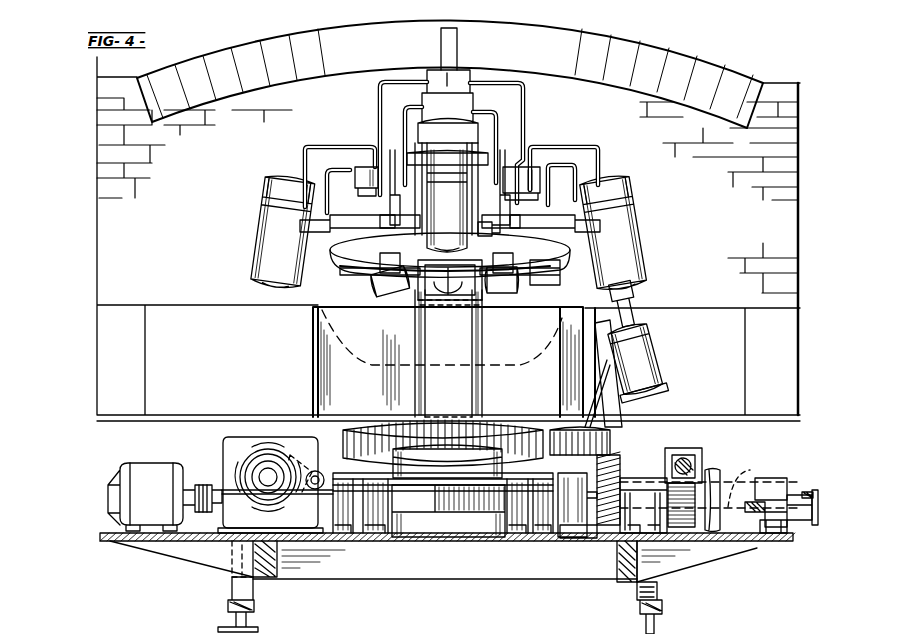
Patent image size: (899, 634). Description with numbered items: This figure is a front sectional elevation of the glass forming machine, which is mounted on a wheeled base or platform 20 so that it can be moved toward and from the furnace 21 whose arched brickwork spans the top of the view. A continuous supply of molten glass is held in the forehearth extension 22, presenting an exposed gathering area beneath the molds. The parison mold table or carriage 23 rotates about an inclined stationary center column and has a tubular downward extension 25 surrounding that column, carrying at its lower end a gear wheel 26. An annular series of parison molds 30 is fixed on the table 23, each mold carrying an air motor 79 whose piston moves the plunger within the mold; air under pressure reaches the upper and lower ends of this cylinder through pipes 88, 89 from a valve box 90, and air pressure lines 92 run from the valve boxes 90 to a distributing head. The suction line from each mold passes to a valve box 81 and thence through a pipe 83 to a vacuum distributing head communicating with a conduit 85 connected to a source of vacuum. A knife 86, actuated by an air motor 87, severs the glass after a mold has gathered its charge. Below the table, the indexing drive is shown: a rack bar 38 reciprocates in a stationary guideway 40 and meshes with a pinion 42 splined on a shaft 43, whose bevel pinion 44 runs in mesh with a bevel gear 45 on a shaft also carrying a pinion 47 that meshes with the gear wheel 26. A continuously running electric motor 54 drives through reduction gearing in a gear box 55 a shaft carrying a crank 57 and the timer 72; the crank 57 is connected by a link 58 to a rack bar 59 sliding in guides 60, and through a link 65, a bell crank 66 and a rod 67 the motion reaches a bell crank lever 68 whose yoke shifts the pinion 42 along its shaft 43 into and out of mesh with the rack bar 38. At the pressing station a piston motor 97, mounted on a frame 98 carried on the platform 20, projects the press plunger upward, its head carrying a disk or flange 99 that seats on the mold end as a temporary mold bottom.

The wheeled base or platform 20 is at (333, 580).
The furnace 21 is at (300, 48).
The forehearth extension 22 is at (313, 347).
The parison mold table or carriage 23 is at (335, 262).
The tubular downward extension 25 is at (482, 341).
The gear wheel 26 is at (503, 420).
The blank or parison mold 30 is at (457, 203).
The rack bar 38 is at (710, 468).
The stationary guideway 40 is at (690, 448).
The pinion 42 is at (680, 555).
The shaft 43 is at (760, 480).
The bevel pinion 44 is at (612, 474).
The bevel gear 45 is at (605, 446).
The pinion 47 is at (622, 418).
The electric motor 54 is at (138, 468).
The gear box 55 is at (232, 436).
The crank 57 is at (312, 490).
The link 58 is at (308, 460).
The rack bar 59 is at (432, 497).
The guides 60 is at (470, 478).
The link 65 is at (575, 538).
The bell crank 66 is at (786, 505).
The rod 67 is at (813, 495).
The bell crank lever 68 is at (787, 520).
The timer 72 is at (268, 486).
The air motor 79 is at (270, 186).
The valve box 81 is at (486, 225).
The pipe 83 is at (377, 103).
The conduit 85 is at (458, 50).
The knife 86 is at (378, 268).
The air motor 87 is at (388, 294).
The pipe 88 is at (333, 145).
The pipe 89 is at (340, 172).
The valve box 90 is at (366, 166).
The air pressure line 92 is at (410, 116).
The piston motor 97 is at (657, 352).
The frame 98 is at (630, 398).
The disk or flange 99 is at (640, 287).